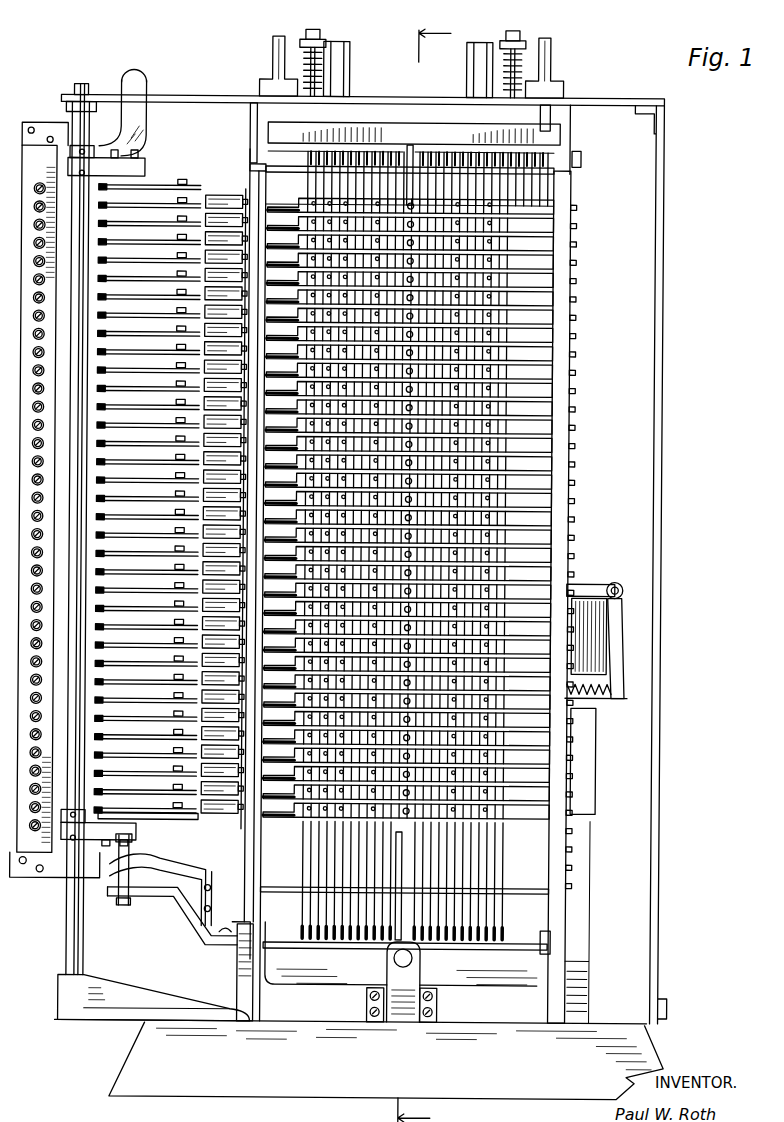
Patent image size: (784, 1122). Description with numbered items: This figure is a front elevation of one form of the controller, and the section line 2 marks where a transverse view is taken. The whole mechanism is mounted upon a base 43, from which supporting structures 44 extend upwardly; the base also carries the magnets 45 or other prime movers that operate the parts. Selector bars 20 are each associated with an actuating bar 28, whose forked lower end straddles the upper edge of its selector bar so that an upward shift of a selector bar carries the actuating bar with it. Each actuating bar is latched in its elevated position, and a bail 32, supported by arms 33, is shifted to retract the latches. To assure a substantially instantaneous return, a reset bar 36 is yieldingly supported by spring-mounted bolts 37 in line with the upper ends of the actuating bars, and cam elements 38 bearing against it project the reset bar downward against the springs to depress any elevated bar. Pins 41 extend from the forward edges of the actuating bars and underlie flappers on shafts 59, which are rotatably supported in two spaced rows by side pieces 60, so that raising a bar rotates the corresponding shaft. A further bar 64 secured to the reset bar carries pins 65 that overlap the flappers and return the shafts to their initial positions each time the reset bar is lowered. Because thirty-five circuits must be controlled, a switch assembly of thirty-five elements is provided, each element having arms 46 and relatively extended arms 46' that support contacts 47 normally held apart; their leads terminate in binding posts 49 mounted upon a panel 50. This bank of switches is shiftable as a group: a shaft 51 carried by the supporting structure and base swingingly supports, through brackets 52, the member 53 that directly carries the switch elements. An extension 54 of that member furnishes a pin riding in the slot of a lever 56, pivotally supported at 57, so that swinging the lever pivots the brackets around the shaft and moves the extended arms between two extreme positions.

The section line 2- 2 is at (410, 573).
The selector bars 20 is at (487, 928).
The actuating bars 28 is at (540, 462).
The bail 32 is at (580, 163).
The arms 33 is at (346, 86).
The reset bar 36 is at (556, 143).
The spring-mounted bolts 37 is at (312, 40).
The cam elements 38 is at (258, 116).
The pins 41 is at (530, 256).
The base 43 is at (642, 1048).
The supporting structures 44 is at (661, 462).
The magnets 45 is at (608, 664).
The arms 46 is at (147, 480).
The extended arms 46' is at (191, 479).
The contacts 47 is at (192, 196).
The binding posts 49 is at (38, 835).
The panel 50 is at (58, 500).
The shaft 51 is at (70, 112).
The brackets 52 is at (120, 166).
The member 53 is at (133, 817).
The extension 54 is at (127, 909).
The lever 56 is at (188, 915).
The pivot 57 is at (230, 931).
The shafts 59 is at (575, 303).
The side pieces 60 is at (262, 198).
The bar 64 is at (410, 147).
The pins 65 is at (500, 199).